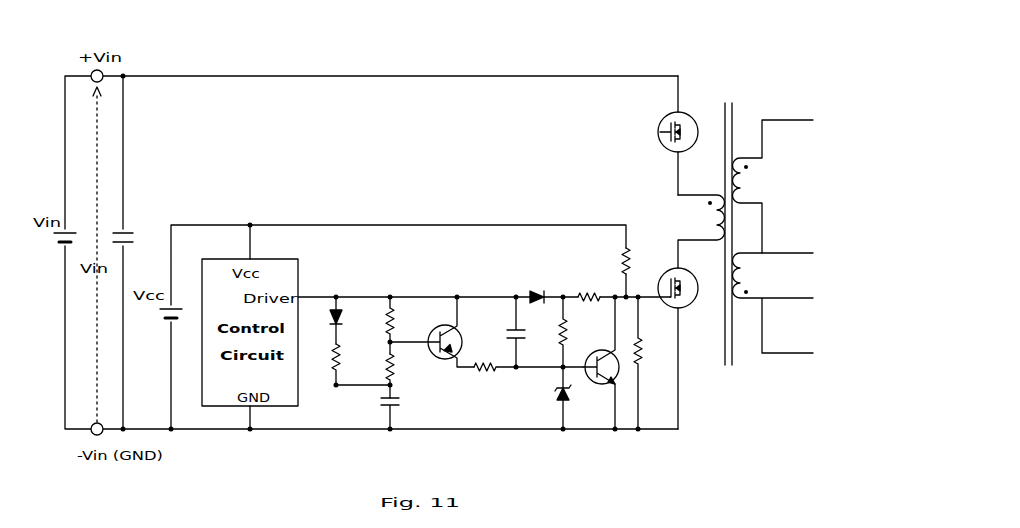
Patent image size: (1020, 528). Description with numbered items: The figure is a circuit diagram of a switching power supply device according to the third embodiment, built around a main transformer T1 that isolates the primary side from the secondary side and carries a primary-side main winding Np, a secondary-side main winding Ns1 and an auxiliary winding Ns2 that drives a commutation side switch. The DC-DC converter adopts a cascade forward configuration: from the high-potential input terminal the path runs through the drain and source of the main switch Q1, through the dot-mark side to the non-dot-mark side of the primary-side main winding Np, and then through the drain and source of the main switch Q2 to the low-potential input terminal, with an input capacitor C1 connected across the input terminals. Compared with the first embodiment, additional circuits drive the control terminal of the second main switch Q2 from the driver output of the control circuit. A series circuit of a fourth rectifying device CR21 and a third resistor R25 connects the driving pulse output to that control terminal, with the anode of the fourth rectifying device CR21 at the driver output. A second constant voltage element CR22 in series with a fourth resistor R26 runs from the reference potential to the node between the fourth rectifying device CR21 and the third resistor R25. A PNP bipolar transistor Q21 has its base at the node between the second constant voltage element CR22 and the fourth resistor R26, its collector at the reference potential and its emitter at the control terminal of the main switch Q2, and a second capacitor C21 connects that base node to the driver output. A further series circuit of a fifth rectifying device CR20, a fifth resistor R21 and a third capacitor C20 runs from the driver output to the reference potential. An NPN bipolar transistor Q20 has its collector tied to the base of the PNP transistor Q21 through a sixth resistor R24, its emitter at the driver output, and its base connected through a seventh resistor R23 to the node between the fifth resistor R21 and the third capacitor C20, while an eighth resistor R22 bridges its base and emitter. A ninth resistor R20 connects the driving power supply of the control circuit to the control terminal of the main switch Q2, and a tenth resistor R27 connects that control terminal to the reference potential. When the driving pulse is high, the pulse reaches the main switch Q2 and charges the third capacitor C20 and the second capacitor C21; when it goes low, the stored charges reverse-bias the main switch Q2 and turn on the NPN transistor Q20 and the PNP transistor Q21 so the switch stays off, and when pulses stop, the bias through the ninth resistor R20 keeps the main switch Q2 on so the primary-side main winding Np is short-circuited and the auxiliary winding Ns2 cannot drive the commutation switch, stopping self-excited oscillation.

The input capacitor C1 is at (130, 228).
The fifth rectifying device CR20 is at (335, 310).
The fifth resistor R21 is at (352, 378).
The eighth resistor R22 is at (390, 315).
The seventh resistor R23 is at (408, 376).
The third capacitor C20 is at (410, 413).
The NPN type bipolar transistor Q20 is at (432, 332).
The sixth resistor R24 is at (527, 378).
The second capacitor C21 is at (502, 332).
The fourth rectifying device CR21 is at (534, 285).
The third resistor R25 is at (586, 288).
The ninth resistor R20 is at (608, 256).
The fourth resistor R26 is at (582, 342).
The second constant voltage element CR22 is at (543, 407).
The PNP type bipolar transistor Q21 is at (599, 363).
The tenth resistor R27 is at (654, 363).
The main switch Q1 is at (675, 135).
The primary-side main winding Np is at (691, 231).
The main switch Q2 is at (675, 342).
The main transformer T1 is at (729, 222).
The secondary-side main winding Ns1 is at (773, 186).
The auxiliary winding Ns2 is at (773, 303).